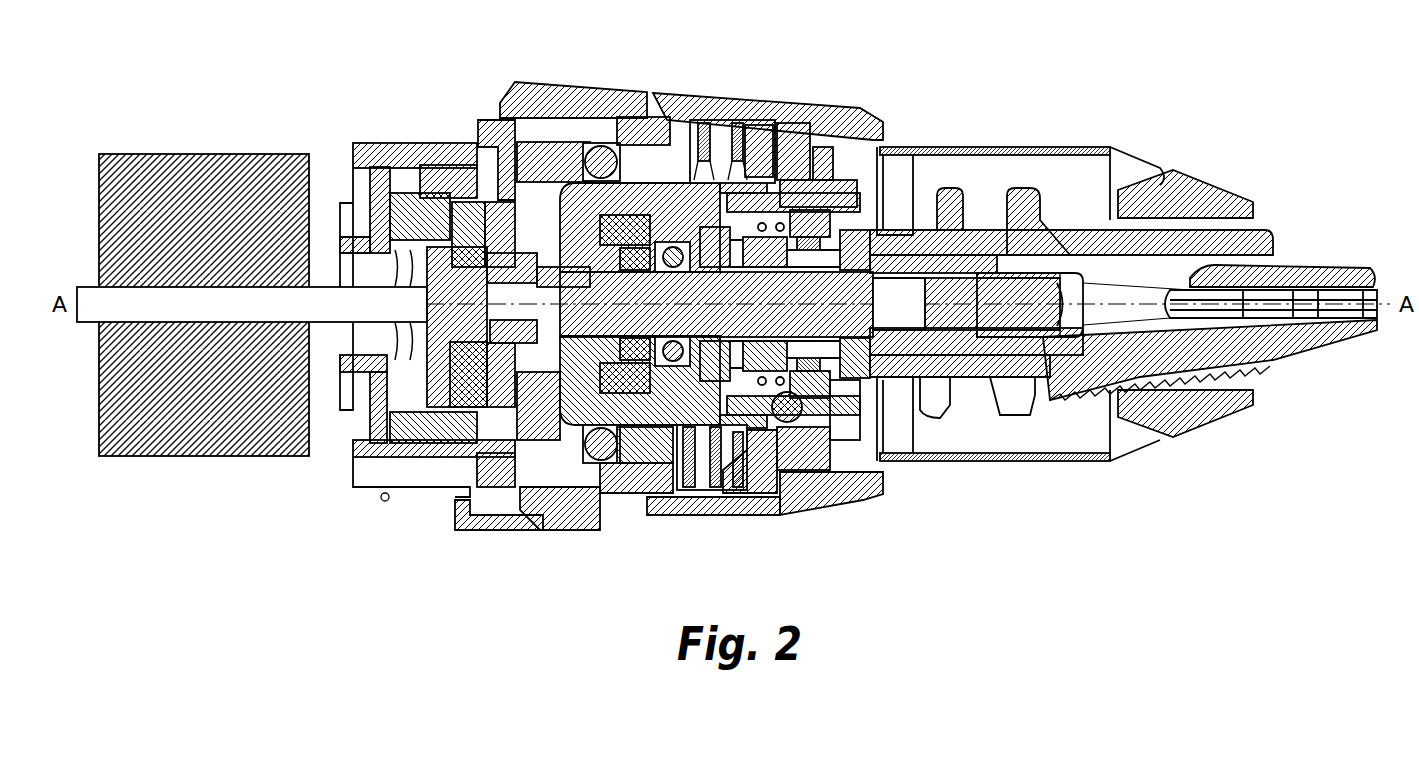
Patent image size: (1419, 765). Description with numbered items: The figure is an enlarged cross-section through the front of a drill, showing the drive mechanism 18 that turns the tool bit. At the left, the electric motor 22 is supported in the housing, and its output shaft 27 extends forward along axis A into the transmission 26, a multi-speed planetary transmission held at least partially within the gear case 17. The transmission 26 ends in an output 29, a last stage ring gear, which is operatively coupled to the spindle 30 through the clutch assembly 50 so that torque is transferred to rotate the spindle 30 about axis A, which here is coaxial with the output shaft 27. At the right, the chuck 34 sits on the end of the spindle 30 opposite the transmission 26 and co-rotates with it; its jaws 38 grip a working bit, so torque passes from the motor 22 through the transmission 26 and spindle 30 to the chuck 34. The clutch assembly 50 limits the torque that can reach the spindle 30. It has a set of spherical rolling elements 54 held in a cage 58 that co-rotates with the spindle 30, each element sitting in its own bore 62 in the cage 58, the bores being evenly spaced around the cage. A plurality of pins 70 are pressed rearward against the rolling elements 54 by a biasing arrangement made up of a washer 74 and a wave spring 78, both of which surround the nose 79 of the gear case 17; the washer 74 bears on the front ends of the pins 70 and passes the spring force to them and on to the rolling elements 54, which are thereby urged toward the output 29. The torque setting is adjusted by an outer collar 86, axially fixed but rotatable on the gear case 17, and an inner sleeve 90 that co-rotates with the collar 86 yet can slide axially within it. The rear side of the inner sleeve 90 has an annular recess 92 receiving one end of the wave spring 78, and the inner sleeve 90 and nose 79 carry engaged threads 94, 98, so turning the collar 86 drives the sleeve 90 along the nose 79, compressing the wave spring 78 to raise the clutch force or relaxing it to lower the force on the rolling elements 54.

The gear case 17 is at (551, 84).
The drive mechanism 18 is at (296, 128).
The electric motor 22 is at (200, 170).
The transmission 26 is at (470, 398).
The output shaft 27 is at (225, 320).
The output 29 is at (537, 485).
The spindle 30 is at (883, 376).
The chuck 34 is at (1163, 118).
The jaws 38 is at (1290, 272).
The clutch assembly 50 is at (800, 495).
The spherical rolling elements 54 is at (611, 130).
The cage 58 is at (545, 142).
The bore 62 is at (604, 478).
The pins 70 is at (640, 465).
The washer 74 is at (680, 488).
The wave spring 78 is at (716, 488).
The nose 79 is at (786, 140).
The outer collar 86 is at (820, 105).
The inner sleeve 90 is at (767, 487).
The annular recess 92 is at (730, 128).
The threads 94 is at (697, 140).
The threads 98 is at (727, 140).